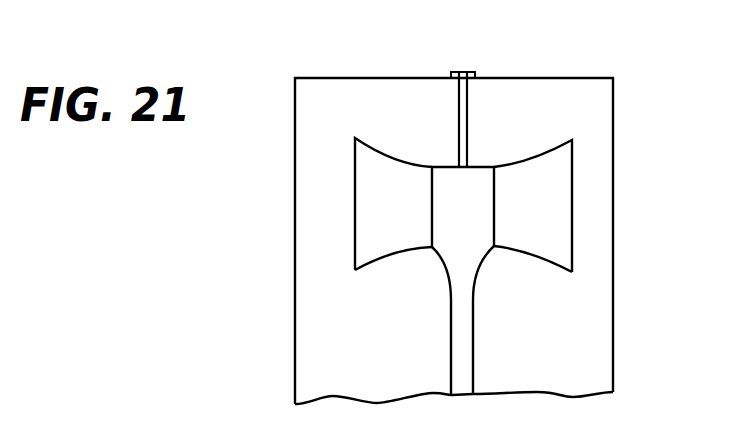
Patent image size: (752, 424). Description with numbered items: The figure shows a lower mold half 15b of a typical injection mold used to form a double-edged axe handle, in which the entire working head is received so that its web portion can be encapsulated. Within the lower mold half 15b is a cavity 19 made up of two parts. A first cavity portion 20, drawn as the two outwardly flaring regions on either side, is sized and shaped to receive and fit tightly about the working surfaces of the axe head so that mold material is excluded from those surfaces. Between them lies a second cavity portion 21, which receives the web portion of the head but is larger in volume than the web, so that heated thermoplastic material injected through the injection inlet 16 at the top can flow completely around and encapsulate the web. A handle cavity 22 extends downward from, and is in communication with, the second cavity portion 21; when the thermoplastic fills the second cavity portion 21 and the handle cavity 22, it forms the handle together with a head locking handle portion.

The lower mold half 15b is at (348, 77).
The injection inlet 16 is at (468, 113).
The cavity 19 is at (458, 267).
The first cavity portion 20 is at (389, 203).
The second cavity portion 21 is at (465, 210).
The handle cavity 22 is at (463, 343).